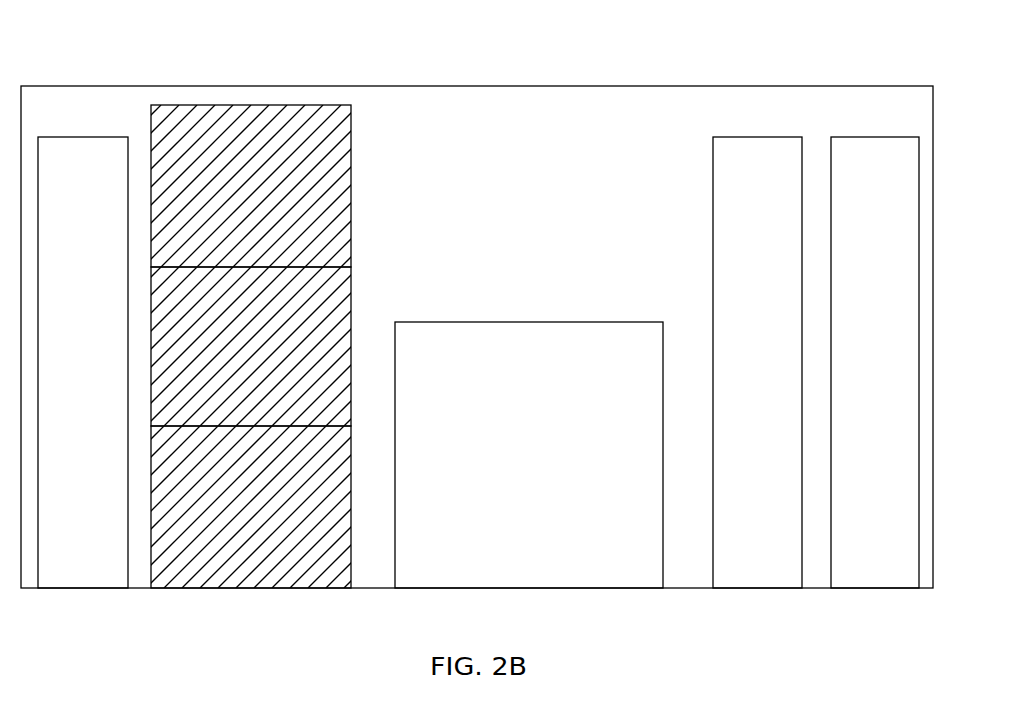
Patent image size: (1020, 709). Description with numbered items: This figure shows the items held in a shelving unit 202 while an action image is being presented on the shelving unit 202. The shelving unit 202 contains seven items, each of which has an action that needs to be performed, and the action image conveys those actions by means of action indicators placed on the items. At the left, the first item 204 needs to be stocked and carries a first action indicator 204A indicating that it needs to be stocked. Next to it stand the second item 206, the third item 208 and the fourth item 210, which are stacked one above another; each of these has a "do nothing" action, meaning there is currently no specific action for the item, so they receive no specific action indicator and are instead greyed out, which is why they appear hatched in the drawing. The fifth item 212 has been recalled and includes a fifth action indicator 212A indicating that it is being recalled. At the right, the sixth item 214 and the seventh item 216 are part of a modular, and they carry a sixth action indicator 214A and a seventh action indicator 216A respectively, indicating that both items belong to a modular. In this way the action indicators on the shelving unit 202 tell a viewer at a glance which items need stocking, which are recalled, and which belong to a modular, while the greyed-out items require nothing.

The shelving unit 202 is at (435, 85).
The first item 204 is at (93, 327).
The first action indicator 204A is at (96, 492).
The second item 206 is at (352, 160).
The third item 208 is at (352, 293).
The fourth item 210 is at (215, 590).
The fifth item 212 is at (627, 321).
The fifth action indicator 212A is at (554, 468).
The sixth item 214 is at (763, 303).
The sixth action indicator 214A is at (762, 467).
The seventh item 216 is at (887, 303).
The seventh action indicator 216A is at (880, 467).